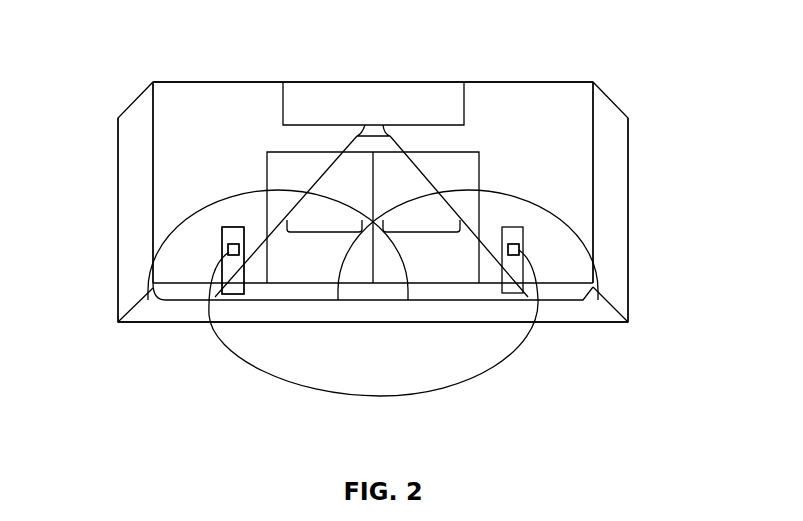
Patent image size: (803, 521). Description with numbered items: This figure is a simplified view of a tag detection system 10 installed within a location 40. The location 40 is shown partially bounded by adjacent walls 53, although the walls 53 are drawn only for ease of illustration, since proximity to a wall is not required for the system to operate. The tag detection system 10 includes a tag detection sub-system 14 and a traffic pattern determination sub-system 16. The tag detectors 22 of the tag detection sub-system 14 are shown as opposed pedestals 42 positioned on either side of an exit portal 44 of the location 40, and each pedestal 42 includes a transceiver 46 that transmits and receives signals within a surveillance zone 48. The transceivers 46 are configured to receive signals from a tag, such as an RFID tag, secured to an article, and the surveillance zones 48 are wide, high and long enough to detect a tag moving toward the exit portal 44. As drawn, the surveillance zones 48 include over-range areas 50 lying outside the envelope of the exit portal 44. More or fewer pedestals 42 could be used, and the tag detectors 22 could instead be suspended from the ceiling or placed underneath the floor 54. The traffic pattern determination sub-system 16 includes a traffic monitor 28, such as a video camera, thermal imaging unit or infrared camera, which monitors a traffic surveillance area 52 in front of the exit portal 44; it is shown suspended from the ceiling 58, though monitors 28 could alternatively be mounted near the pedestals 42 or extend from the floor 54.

The tag detection system 10 is at (291, 54).
The tag detection sub-system 14 is at (221, 262).
The traffic pattern determination sub-system 16 is at (437, 92).
The tag detectors 22 is at (228, 248).
The traffic monitor 28 is at (373, 126).
The location 40 is at (78, 212).
The pedestals 42 is at (233, 227).
The exit portal 44 is at (457, 165).
The transceiver 46 is at (240, 256).
The surveillance zone 48 is at (222, 193).
The over-range areas 50 is at (172, 290).
The traffic surveillance area 52 is at (367, 368).
The walls 53 is at (191, 117).
The floor 54 is at (598, 322).
The ceiling 58 is at (193, 80).